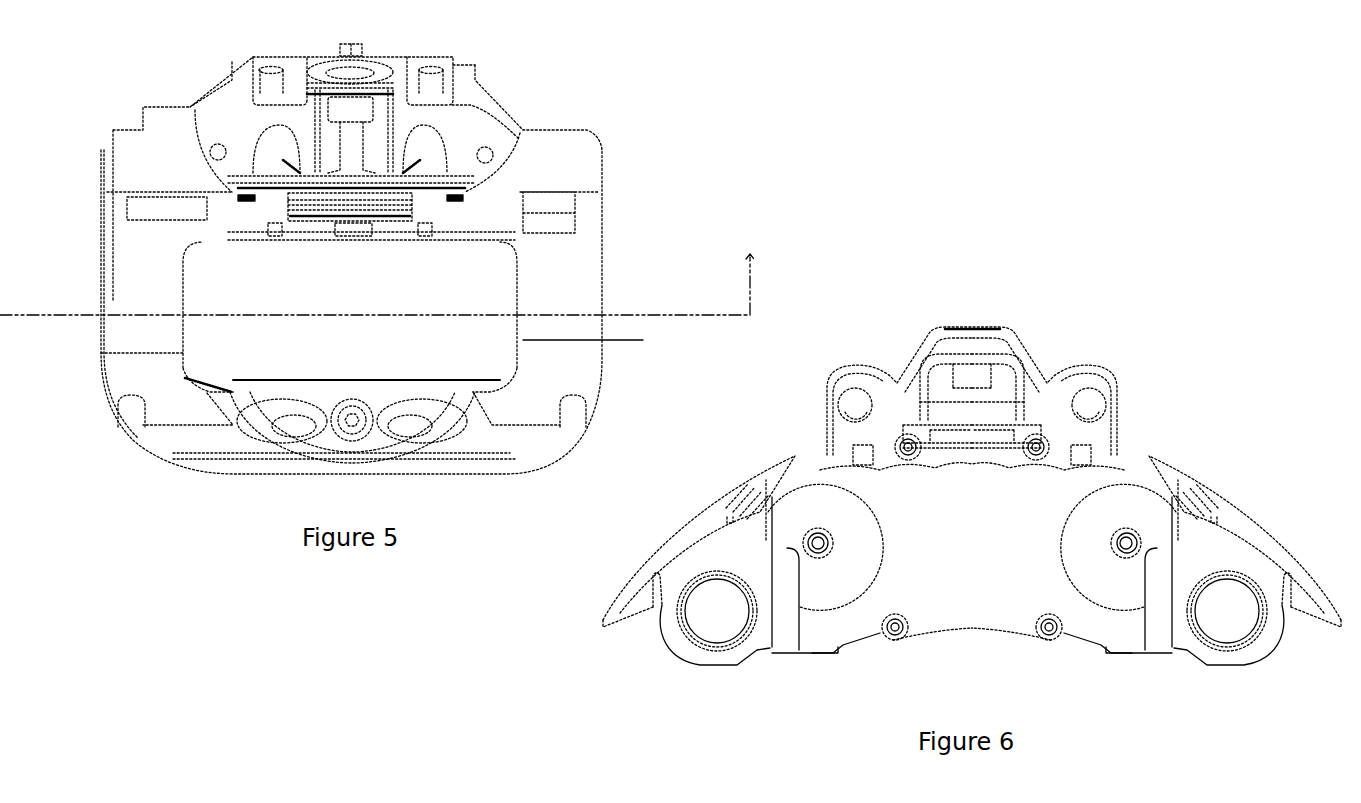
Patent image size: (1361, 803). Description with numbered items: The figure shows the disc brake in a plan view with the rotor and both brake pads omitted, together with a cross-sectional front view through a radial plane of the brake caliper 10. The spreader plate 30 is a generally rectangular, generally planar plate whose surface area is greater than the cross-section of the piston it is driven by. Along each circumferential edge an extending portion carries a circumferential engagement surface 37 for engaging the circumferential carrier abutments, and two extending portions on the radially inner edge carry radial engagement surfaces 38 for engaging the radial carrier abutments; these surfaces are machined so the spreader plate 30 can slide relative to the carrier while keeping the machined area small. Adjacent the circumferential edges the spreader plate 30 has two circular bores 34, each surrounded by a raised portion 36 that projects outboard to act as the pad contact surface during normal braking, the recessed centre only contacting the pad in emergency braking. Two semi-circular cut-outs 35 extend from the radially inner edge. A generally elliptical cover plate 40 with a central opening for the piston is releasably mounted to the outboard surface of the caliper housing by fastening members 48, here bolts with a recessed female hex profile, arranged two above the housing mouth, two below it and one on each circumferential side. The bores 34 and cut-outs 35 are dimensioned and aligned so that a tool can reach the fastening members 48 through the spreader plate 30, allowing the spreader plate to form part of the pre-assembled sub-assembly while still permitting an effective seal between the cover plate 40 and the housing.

In FIG. 5, the brake caliper 10 is at (381, 259).
In FIG. 5, the spreader plate 30 is at (460, 237).
In FIG. 6, the spreader plate 30 is at (952, 505).
In FIG. 6, the bores 34 is at (803, 543).
In FIG. 6, the cut-out portions 35 is at (800, 653).
In FIG. 6, the raised portions 36 is at (818, 498).
In FIG. 6, the circumferential engagement surface 37 is at (752, 530).
In FIG. 6, the radial engagement surface 38 is at (825, 655).
In FIG. 5, the cover plate 40 is at (437, 193).
In FIG. 6, the cover plate 40 is at (1055, 455).
In FIG. 5, the fastening members 48 is at (243, 197).
In FIG. 6, the fastening members 48 is at (908, 447).